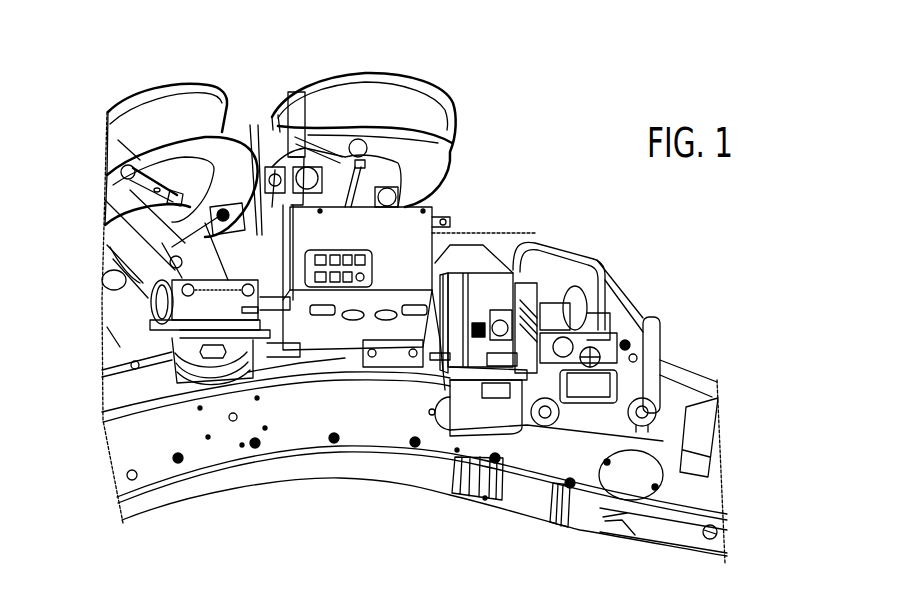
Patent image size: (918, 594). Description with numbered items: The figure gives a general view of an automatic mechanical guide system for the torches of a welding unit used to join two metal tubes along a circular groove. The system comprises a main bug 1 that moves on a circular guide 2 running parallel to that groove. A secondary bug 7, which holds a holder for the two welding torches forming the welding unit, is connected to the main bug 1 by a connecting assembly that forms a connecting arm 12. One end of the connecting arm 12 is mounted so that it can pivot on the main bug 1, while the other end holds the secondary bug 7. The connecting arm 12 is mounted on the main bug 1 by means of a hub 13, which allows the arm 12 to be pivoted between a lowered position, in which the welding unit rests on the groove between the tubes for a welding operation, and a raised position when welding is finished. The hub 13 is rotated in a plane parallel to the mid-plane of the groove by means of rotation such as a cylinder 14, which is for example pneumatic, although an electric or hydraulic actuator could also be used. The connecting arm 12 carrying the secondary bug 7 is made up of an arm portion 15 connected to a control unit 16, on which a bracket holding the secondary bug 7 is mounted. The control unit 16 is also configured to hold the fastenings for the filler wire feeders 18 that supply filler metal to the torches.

The main bug 1 is at (100, 350).
The circular guide 2 is at (277, 457).
The secondary bug 7 is at (645, 400).
The connecting arm 12 is at (540, 205).
The hub 13 is at (232, 355).
The cylinder 14 is at (247, 230).
The arm portion 15 is at (150, 292).
The control unit 16 is at (408, 263).
The filler wire feeders 18 is at (167, 120).